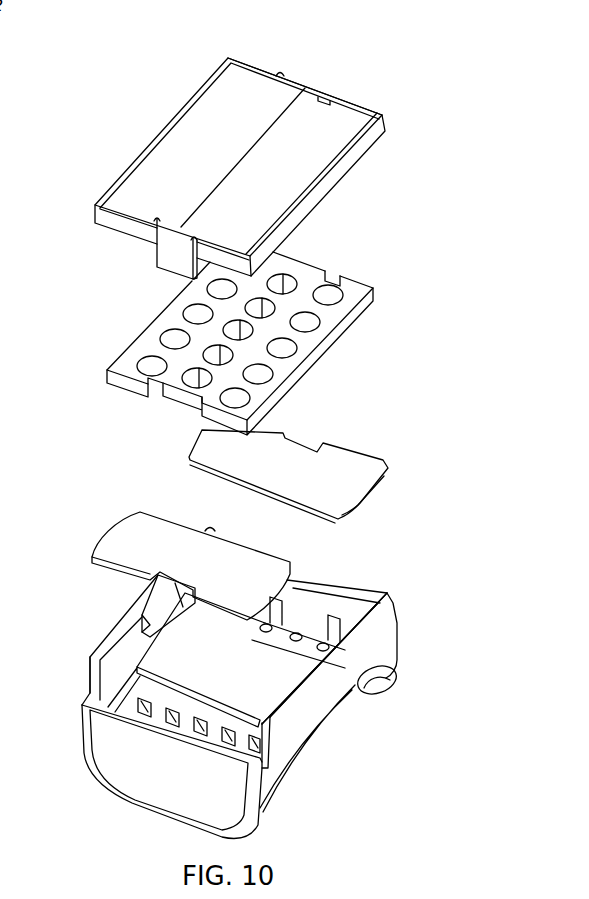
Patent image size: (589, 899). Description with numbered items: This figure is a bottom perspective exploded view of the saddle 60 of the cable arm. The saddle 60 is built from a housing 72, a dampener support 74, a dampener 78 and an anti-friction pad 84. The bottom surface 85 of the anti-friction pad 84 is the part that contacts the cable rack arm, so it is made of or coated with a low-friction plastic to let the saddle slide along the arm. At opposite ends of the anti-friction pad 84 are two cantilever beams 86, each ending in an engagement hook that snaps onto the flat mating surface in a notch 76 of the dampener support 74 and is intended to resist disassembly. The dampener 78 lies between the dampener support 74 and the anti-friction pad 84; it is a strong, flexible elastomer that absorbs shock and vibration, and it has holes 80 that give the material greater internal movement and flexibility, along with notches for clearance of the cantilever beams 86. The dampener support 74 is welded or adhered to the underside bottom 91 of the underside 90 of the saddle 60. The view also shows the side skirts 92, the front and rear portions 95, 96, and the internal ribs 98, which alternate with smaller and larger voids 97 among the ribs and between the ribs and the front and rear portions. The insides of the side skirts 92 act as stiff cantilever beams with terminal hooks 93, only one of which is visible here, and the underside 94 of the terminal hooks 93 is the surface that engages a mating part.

The saddle 60 is at (345, 61).
The housing 72 is at (380, 686).
The dampener support 74 is at (384, 484).
The notch 76 is at (307, 441).
The dampener 78 is at (376, 293).
The holes 80 is at (335, 282).
The anti-friction pad 84 is at (386, 133).
The bottom surface 85 is at (221, 154).
The cantilever beams 86 is at (163, 267).
The underside 90 is at (66, 693).
The underside bottom 91 is at (208, 669).
The side skirts 92 is at (130, 677).
The terminal hooks 93 is at (155, 608).
The underside 94 is at (141, 629).
The front portion 95 is at (180, 792).
The rear portion 96 is at (351, 607).
The voids 97 is at (303, 637).
The internal ribs 98 is at (273, 644).